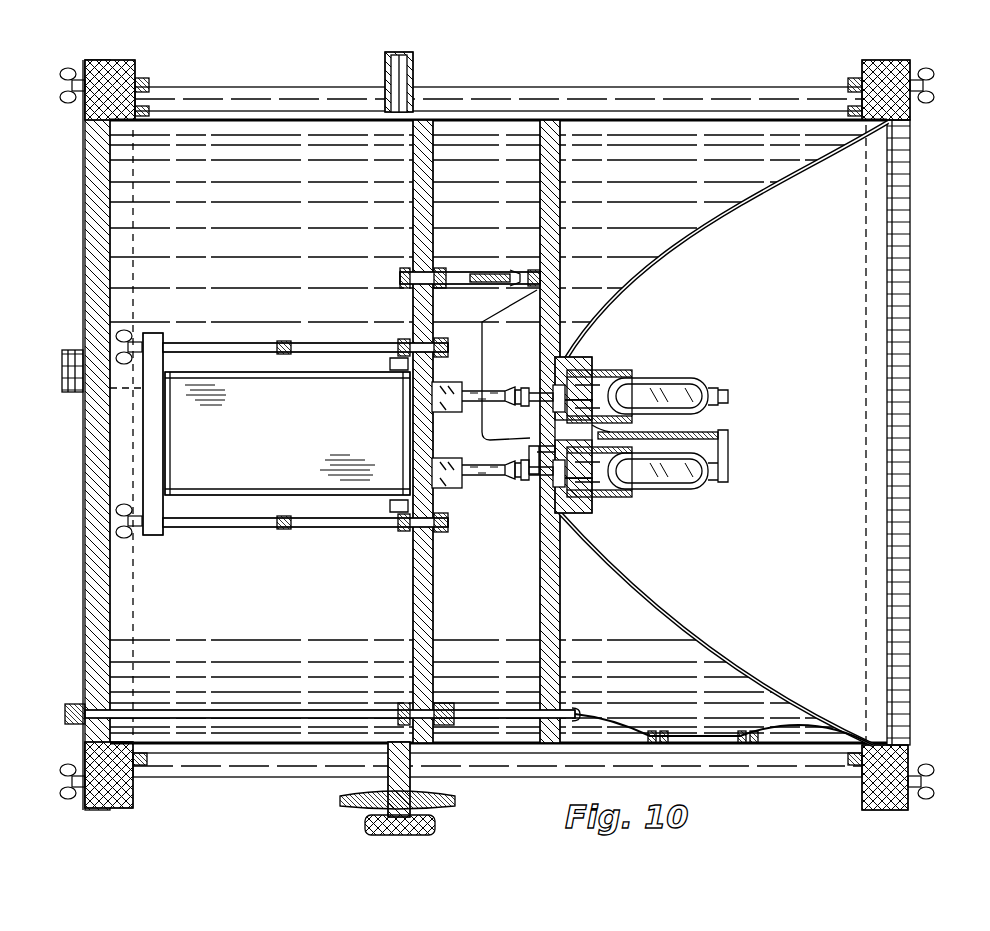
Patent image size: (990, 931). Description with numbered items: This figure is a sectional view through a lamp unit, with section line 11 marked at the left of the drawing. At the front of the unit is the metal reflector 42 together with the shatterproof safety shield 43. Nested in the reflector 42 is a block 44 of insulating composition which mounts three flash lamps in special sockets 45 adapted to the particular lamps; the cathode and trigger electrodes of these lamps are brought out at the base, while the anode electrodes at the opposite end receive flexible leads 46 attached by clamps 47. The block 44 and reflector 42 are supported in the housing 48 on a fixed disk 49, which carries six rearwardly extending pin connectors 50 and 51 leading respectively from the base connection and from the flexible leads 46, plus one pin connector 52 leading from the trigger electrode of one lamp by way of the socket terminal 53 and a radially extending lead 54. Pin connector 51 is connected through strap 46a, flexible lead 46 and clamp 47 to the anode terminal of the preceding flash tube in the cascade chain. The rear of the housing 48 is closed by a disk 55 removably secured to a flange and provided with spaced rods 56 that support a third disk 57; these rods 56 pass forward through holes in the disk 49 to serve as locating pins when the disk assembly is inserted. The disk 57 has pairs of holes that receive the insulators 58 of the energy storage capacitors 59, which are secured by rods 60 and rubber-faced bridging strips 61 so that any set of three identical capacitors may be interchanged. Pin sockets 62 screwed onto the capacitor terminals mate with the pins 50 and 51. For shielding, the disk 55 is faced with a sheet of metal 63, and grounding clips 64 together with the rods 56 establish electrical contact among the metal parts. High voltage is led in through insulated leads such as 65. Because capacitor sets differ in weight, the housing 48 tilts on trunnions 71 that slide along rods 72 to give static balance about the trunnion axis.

The section line of FIG. 11 is at (108, 62).
The reflector 42 is at (742, 668).
The shatterproof safety shield 43 is at (897, 565).
The block of insulating composition 44 is at (575, 360).
The sockets 45 is at (612, 372).
The flexible leads 46 is at (705, 433).
The strap 46a is at (528, 462).
The clamps 47 is at (724, 390).
The housing 48 is at (712, 766).
The fixed disk 49 is at (540, 628).
The pin connectors 50 is at (520, 386).
The pin connectors 51 is at (522, 482).
The pin connector 52 is at (530, 272).
The socket terminal 53 is at (610, 432).
The radially extending lead 54 is at (486, 340).
The disk 55 is at (92, 440).
The spaced rods 56 is at (72, 708).
The third disk 57 is at (432, 605).
The insulators 58 is at (442, 462).
The energy storage capacitors 59 is at (330, 497).
The rods 60 is at (258, 343).
The rubber-faced bridging strips 61 is at (150, 350).
The pin sockets 62 is at (510, 398).
The sheet of metal 63 is at (92, 502).
The grounding clips 64 is at (630, 733).
The insulated leads 65 is at (68, 350).
The trunnions 71 is at (410, 78).
The rods 72 is at (585, 92).